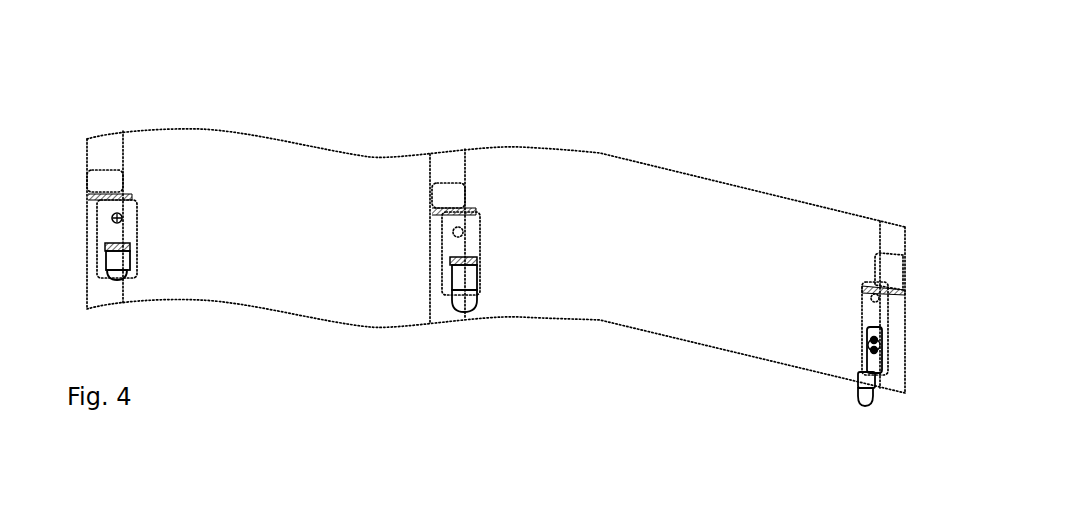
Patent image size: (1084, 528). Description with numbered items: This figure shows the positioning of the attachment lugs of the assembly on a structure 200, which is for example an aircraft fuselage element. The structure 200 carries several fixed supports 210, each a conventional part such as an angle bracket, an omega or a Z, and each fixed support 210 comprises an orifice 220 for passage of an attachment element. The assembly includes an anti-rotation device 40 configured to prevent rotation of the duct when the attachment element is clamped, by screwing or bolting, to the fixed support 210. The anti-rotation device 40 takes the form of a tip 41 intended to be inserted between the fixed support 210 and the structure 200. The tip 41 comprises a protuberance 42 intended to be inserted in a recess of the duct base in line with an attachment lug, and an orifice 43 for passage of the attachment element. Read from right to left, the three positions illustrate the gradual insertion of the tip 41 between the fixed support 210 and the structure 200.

The structure 200 is at (248, 127).
The fixed support 210 is at (108, 183).
The orifice 220 is at (122, 217).
The anti-rotation device 40 is at (150, 278).
The tip 41 is at (870, 365).
The protuberance 42 is at (468, 287).
The orifice 43 is at (872, 345).